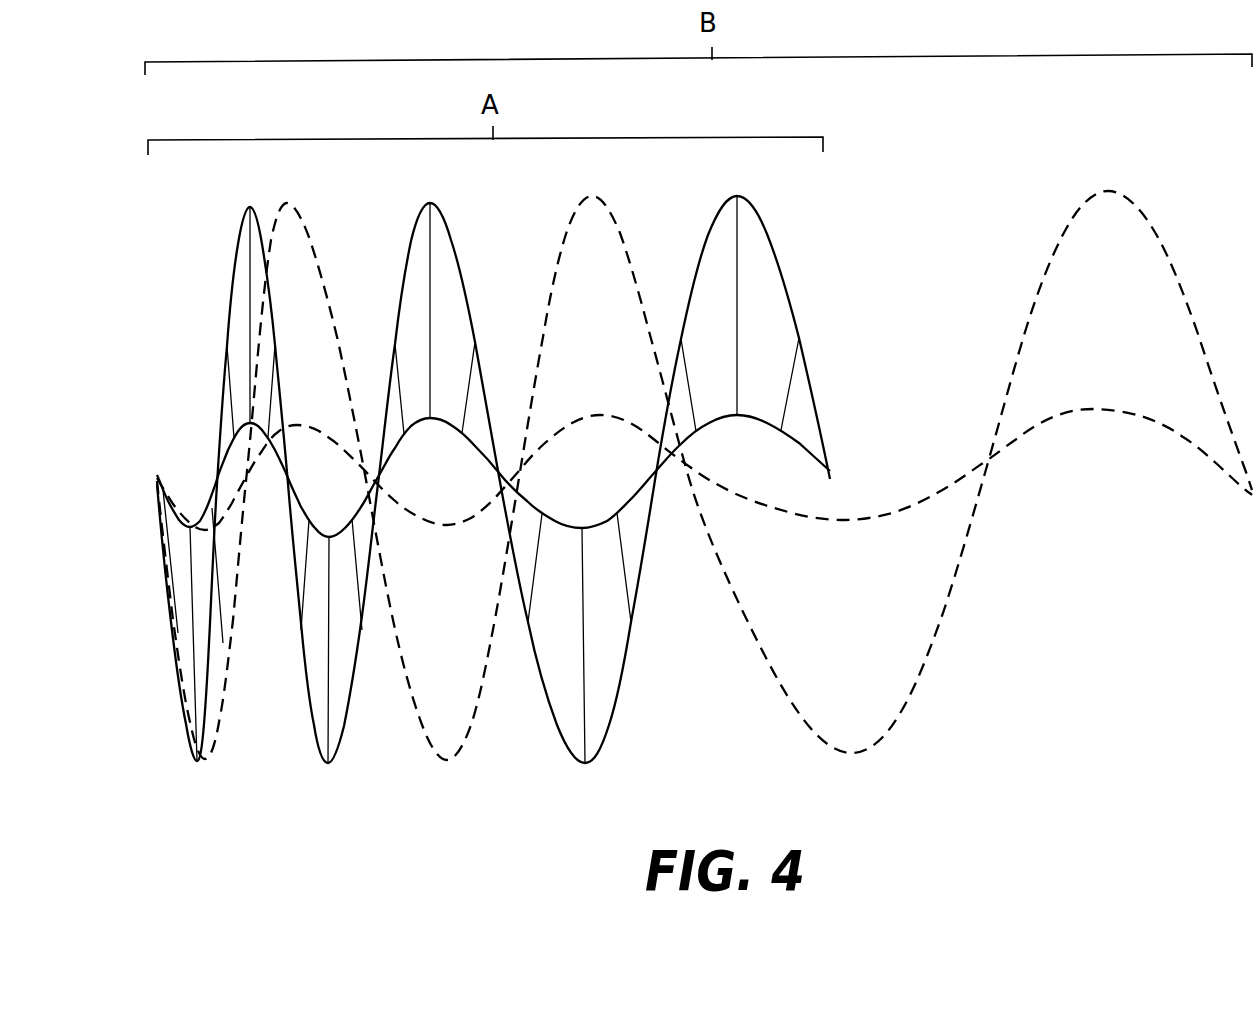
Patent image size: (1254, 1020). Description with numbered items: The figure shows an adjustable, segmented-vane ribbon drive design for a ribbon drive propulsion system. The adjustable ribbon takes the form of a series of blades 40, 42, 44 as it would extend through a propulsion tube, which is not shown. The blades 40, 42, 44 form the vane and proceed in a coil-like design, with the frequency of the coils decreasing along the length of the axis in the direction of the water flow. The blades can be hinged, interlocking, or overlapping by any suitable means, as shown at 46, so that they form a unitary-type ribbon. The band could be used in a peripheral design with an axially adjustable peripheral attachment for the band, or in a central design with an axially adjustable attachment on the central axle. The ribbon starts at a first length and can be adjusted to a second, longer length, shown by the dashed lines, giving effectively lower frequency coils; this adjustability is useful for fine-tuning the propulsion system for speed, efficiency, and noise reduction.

The blade 40 is at (523, 479).
The blade 42 is at (772, 320).
The blade 44 is at (710, 238).
The hinged, interlocking, or overlapping connection 46 is at (746, 247).